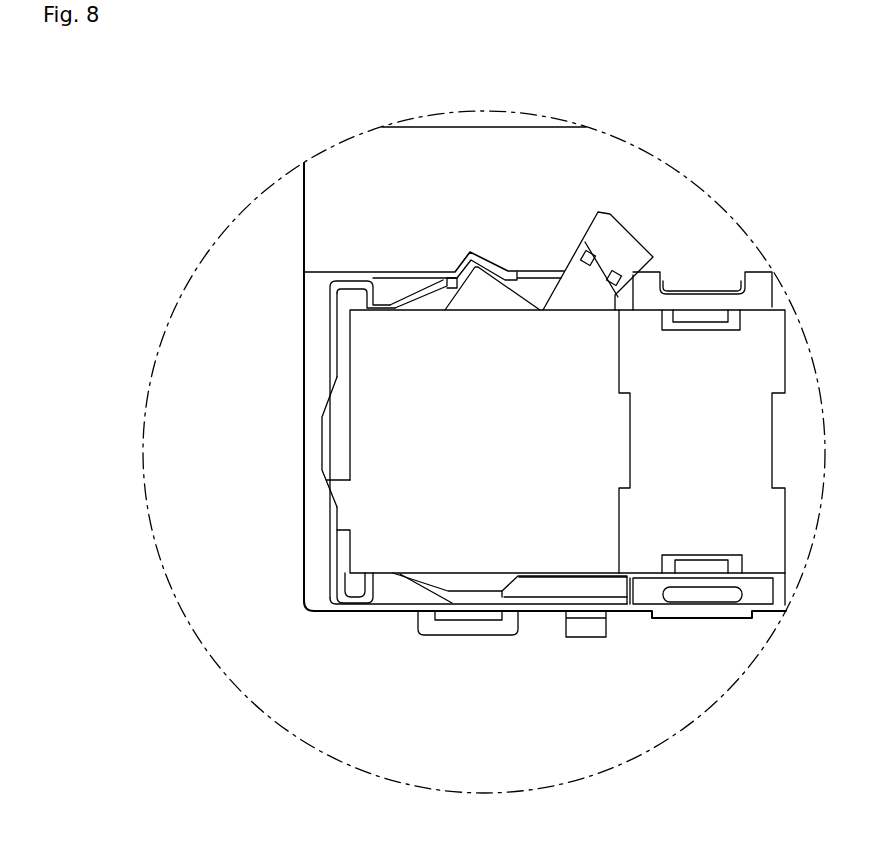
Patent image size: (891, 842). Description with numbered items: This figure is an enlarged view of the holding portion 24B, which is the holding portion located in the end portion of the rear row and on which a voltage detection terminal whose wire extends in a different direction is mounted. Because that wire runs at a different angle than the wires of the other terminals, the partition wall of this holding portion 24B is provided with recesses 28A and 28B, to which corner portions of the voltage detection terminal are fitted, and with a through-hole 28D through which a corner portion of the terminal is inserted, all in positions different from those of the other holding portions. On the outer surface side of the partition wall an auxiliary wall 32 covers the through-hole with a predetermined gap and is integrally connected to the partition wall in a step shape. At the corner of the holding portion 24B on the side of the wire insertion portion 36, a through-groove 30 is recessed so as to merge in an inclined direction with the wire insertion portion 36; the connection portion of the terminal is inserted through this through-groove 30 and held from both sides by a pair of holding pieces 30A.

The holding portion 24B is at (337, 672).
The recess 28A is at (458, 580).
The recess 28B is at (480, 285).
The through-hole 28D is at (340, 495).
The through-groove 30 is at (628, 240).
The holding pieces 30A is at (590, 248).
The auxiliary wall 32 is at (472, 637).
The wire insertion portion 36 is at (448, 152).